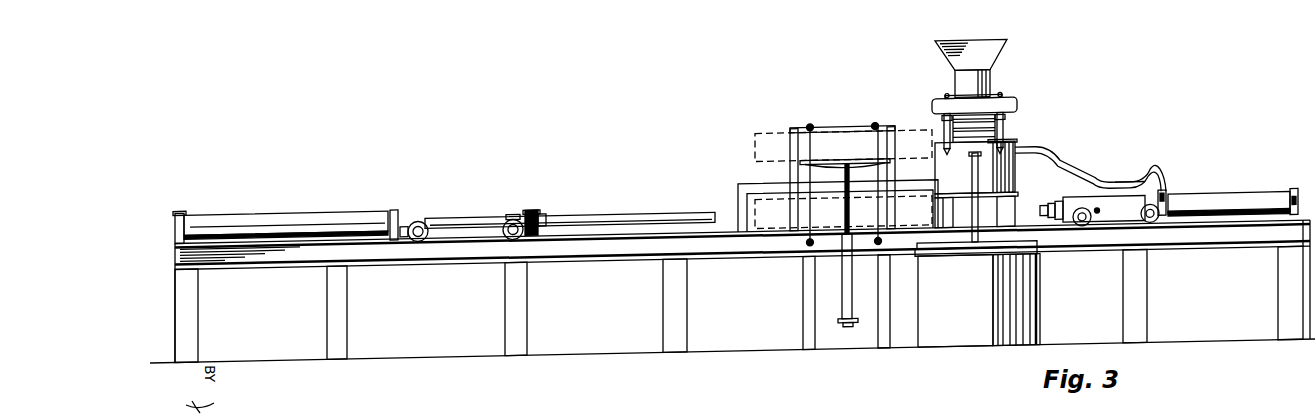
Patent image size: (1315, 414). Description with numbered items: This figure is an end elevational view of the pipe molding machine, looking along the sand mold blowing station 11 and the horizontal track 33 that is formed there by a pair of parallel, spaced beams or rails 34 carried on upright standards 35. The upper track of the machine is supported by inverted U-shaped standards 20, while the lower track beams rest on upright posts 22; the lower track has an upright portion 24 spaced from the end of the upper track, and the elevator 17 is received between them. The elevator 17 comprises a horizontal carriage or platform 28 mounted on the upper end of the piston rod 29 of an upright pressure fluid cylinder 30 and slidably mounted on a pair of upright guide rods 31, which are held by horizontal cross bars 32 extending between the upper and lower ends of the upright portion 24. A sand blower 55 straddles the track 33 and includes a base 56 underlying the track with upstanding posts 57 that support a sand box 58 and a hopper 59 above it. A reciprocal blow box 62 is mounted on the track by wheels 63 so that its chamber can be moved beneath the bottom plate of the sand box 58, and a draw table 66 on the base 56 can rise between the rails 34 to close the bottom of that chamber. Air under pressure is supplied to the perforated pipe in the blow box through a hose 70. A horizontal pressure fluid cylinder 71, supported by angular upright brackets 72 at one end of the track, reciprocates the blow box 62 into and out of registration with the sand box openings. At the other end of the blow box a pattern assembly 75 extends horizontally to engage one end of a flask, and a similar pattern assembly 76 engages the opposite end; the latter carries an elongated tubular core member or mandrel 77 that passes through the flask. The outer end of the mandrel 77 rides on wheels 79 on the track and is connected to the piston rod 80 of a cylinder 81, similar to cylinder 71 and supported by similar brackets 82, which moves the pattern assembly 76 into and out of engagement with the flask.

The sand mold blowing station 11 is at (1130, 200).
The elevator 17 is at (838, 224).
The inverted U-shaped standards 20 is at (748, 303).
The upright posts 22 is at (803, 302).
The upright portion 24 is at (790, 182).
The horizontal carriage or platform 28 is at (858, 178).
The piston rod 29 is at (845, 222).
The upright pressure fluid cylinder 30 is at (852, 289).
The upright guide rods 31 is at (805, 218).
The horizontal cross bars 32 is at (858, 141).
The horizontal track 33 is at (576, 262).
The beams or rails 34 is at (421, 263).
The upright standards 35 is at (327, 325).
The sand blower 55 is at (1038, 153).
The base 56 is at (1050, 292).
The upstanding posts 57 is at (985, 238).
The sand box 58 is at (935, 178).
The hopper 59 is at (950, 76).
The reciprocal blow box 62 is at (1120, 242).
The wheels 63 is at (1153, 243).
The draw table 66 is at (920, 273).
The hose 70 is at (1078, 188).
The horizontal pressure fluid cylinder 71 is at (1245, 208).
The angular upright brackets 72 is at (1165, 212).
The pattern assembly 75 is at (1056, 220).
The pattern assembly 76 is at (557, 211).
The tubular core member or mandrel 77 is at (654, 222).
The wheels 79 is at (512, 222).
The piston rod 80 is at (417, 226).
The cylinder 81 is at (296, 216).
The brackets 82 is at (183, 213).